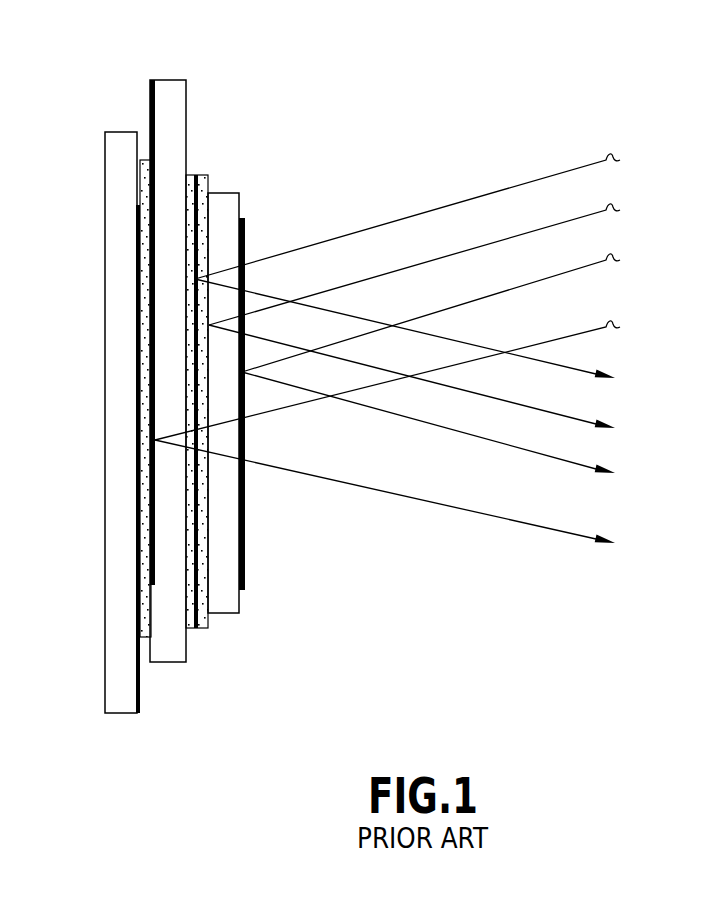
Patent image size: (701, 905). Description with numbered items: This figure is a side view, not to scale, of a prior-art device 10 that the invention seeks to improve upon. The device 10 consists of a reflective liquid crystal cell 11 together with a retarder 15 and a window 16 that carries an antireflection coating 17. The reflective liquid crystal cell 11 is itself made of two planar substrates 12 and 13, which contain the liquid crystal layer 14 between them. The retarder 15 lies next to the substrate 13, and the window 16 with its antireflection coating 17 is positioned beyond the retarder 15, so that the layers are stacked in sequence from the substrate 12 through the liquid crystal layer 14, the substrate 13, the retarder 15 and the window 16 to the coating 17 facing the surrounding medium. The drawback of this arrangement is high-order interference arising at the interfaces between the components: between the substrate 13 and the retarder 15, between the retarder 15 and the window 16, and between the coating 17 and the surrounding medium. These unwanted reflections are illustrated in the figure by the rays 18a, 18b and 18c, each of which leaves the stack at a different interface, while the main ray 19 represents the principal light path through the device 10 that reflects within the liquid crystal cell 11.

The prior-art device 10 is at (98, 738).
The reflective liquid crystal cell 11 is at (103, 69).
The planar substrate 12 is at (105, 148).
The planar substrate 13 is at (187, 92).
The liquid crystal layer 14 is at (148, 598).
The retarder 15 is at (199, 208).
The window 16 is at (222, 613).
The antireflection coating 17 is at (242, 538).
The ray 18a is at (570, 363).
The ray 18b is at (577, 417).
The ray 18c is at (557, 458).
The main ray 19 is at (555, 523).